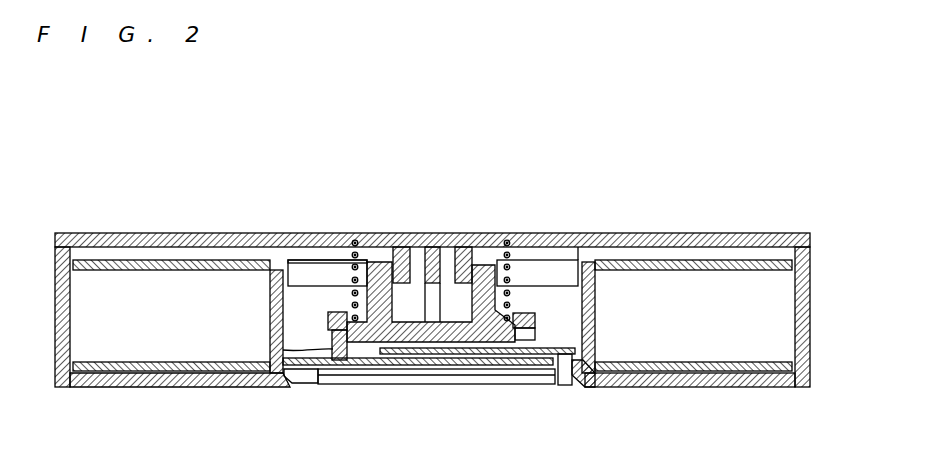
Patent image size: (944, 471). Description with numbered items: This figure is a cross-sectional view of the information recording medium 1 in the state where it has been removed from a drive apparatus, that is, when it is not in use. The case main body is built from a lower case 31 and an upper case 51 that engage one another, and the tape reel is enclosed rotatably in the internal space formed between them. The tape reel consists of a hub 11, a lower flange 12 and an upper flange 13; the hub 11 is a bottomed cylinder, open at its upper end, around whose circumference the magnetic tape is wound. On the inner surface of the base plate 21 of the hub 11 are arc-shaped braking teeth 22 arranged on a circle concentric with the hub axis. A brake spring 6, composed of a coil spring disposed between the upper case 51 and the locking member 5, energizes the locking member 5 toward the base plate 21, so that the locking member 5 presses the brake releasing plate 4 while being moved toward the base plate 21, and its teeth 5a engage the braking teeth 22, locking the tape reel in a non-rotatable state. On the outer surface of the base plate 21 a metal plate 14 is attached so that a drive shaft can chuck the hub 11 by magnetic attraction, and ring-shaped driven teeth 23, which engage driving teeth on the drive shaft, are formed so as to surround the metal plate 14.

The information recording medium 1 is at (447, 159).
The brake releasing plate 4 is at (562, 383).
The locking member 5 is at (380, 303).
The teeth 5a is at (320, 328).
The brake spring 6 is at (372, 233).
The hub 11 is at (596, 288).
The lower flange 12 is at (713, 374).
The upper flange 13 is at (690, 262).
The metal plate 14 is at (402, 366).
The base plate 21 is at (355, 362).
The braking teeth 22 is at (271, 348).
The driven teeth 23 is at (304, 391).
The lower case 31 is at (811, 345).
The upper case 51 is at (811, 273).